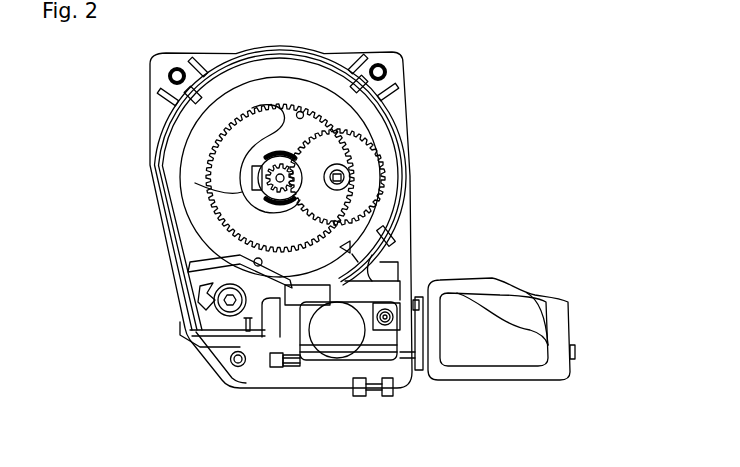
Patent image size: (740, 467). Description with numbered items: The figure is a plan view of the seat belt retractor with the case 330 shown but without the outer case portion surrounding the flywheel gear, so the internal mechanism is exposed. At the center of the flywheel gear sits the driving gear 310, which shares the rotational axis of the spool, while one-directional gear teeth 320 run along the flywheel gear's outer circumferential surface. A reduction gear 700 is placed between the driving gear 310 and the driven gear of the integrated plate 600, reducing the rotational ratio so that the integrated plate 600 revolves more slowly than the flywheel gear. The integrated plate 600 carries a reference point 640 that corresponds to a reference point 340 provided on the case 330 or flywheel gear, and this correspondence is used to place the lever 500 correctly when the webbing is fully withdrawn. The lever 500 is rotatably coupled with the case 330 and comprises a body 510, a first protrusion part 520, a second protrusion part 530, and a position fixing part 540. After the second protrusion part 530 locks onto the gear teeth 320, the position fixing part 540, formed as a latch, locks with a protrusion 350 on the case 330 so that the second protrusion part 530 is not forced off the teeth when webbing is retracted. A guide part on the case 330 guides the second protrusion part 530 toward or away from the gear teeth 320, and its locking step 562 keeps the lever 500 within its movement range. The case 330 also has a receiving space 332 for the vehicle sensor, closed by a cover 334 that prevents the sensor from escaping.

The case 330 is at (400, 103).
The integrated plate 600 is at (345, 118).
The reduction gear 700 is at (372, 172).
The driving gear 310 is at (252, 176).
The reference point 640 is at (390, 238).
The reference point 340 is at (372, 267).
The cover 334 is at (558, 312).
The lever 500 is at (97, 244).
The second protrusion part 530 is at (258, 262).
The first protrusion part 520 is at (195, 268).
The position fixing part 540 is at (205, 297).
The body 510 is at (195, 331).
The locking step 562 is at (225, 347).
The protrusion 350 is at (248, 332).
The gear teeth 320 is at (318, 368).
The receiving space 332 is at (392, 396).